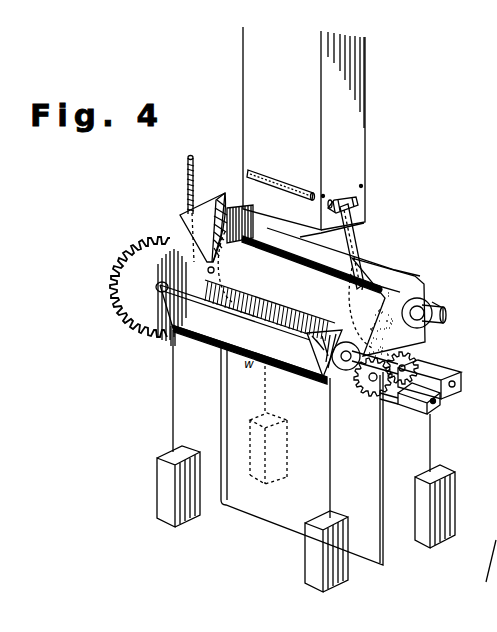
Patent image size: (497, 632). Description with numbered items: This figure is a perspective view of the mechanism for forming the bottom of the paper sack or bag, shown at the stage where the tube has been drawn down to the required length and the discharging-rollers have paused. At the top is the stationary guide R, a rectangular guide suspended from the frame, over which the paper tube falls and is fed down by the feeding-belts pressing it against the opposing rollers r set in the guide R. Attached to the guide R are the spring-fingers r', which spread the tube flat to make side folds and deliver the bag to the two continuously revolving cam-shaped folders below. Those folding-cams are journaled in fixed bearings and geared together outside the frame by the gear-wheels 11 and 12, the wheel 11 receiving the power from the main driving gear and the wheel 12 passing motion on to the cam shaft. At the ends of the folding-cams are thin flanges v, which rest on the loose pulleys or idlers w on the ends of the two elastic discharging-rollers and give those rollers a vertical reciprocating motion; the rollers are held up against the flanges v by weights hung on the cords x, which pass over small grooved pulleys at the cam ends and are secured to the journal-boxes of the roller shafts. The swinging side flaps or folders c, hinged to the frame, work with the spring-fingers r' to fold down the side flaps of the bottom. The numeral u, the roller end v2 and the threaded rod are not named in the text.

The stationary guide R is at (304, 132).
The opposing rollers r is at (281, 185).
The spring-fingers r' is at (312, 245).
The gear-wheel 12 is at (240, 220).
The swinging side flaps or folders c is at (203, 227).
The gear-wheel 11 is at (156, 249).
The thin flanges v is at (402, 311).
The lower roller v2 is at (365, 357).
The loose pulleys or idlers w is at (364, 388).
The shaft u is at (444, 296).
The cords x is at (306, 459).